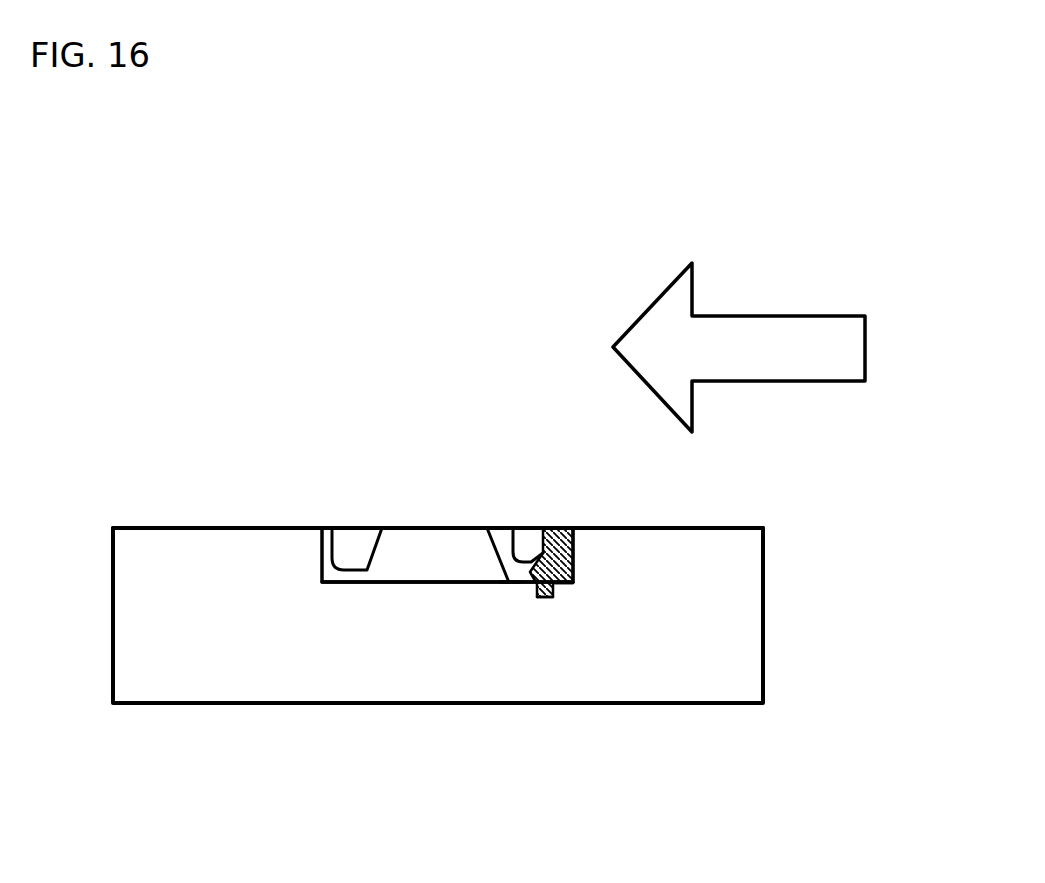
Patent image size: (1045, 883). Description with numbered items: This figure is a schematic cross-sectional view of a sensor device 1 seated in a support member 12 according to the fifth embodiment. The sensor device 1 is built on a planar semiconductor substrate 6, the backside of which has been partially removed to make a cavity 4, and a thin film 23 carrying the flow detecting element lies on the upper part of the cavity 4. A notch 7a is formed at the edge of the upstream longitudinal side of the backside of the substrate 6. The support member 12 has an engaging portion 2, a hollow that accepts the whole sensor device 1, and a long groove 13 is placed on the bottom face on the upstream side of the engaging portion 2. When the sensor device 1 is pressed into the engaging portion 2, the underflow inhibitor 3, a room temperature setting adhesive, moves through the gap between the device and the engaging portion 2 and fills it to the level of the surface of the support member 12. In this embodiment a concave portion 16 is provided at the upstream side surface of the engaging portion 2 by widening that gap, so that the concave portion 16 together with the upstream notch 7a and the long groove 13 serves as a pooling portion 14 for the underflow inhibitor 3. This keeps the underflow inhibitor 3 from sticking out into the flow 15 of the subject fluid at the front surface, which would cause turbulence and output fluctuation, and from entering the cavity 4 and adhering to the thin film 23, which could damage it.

The sensor device 1 is at (438, 466).
The engaging portion 2 is at (395, 701).
The underflow inhibitor 3 is at (438, 708).
The cavity 4 is at (447, 423).
The planar semiconductor substrate 6 is at (332, 449).
The notch 7a is at (555, 492).
The support member 12 is at (529, 632).
The long groove 13 is at (526, 727).
The pooling portion 14 is at (678, 704).
The flow 15 is at (761, 321).
The concave portion 16 is at (673, 525).
The thin film 23 is at (494, 430).